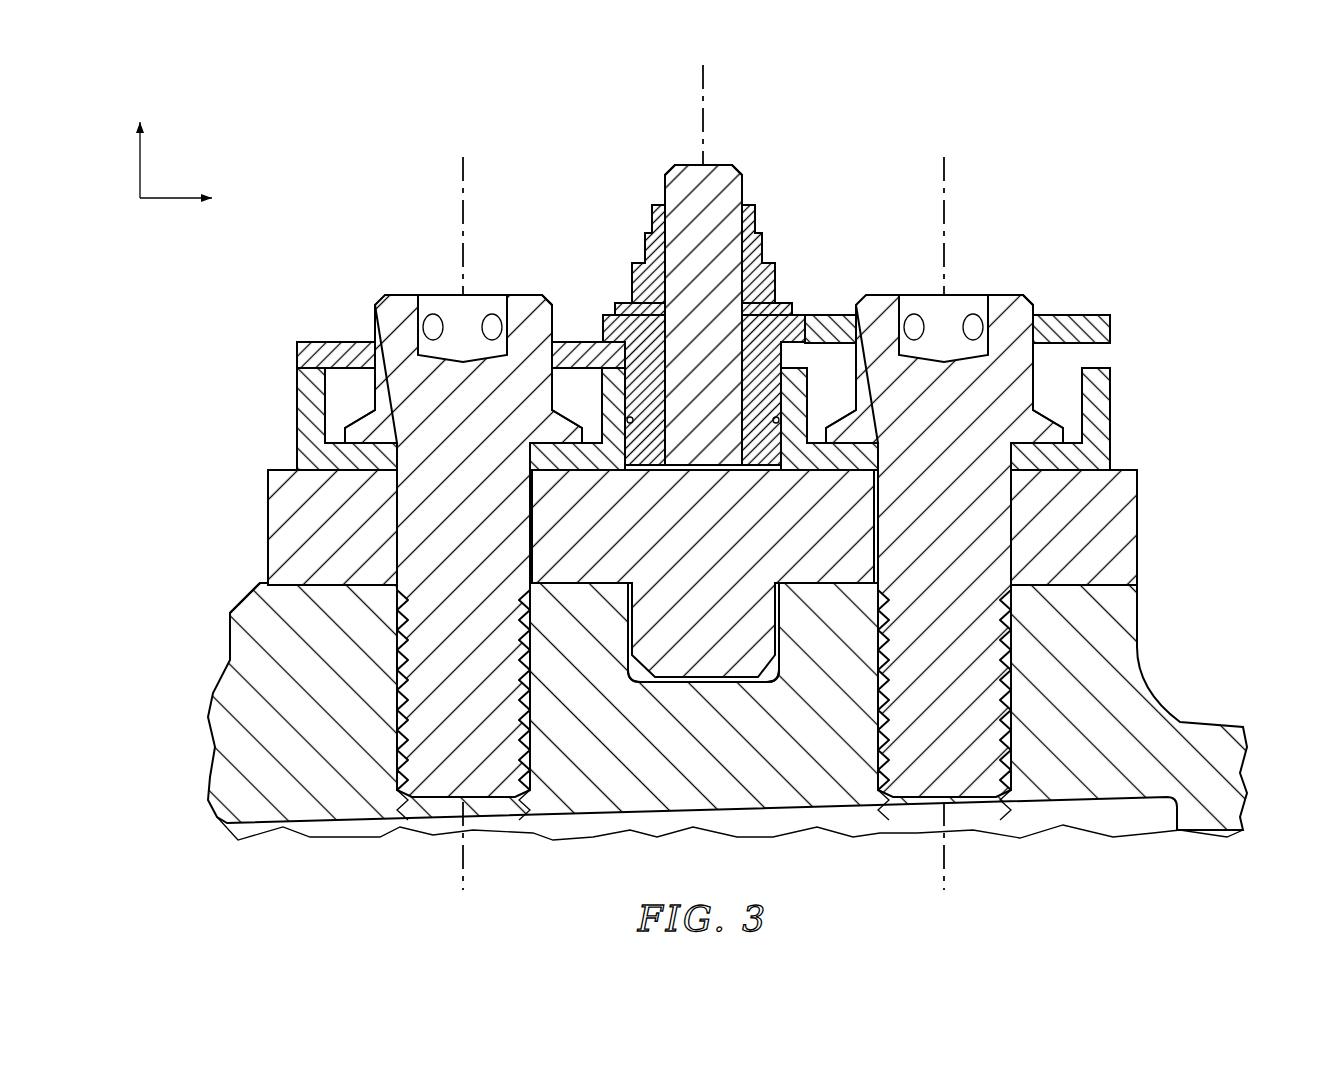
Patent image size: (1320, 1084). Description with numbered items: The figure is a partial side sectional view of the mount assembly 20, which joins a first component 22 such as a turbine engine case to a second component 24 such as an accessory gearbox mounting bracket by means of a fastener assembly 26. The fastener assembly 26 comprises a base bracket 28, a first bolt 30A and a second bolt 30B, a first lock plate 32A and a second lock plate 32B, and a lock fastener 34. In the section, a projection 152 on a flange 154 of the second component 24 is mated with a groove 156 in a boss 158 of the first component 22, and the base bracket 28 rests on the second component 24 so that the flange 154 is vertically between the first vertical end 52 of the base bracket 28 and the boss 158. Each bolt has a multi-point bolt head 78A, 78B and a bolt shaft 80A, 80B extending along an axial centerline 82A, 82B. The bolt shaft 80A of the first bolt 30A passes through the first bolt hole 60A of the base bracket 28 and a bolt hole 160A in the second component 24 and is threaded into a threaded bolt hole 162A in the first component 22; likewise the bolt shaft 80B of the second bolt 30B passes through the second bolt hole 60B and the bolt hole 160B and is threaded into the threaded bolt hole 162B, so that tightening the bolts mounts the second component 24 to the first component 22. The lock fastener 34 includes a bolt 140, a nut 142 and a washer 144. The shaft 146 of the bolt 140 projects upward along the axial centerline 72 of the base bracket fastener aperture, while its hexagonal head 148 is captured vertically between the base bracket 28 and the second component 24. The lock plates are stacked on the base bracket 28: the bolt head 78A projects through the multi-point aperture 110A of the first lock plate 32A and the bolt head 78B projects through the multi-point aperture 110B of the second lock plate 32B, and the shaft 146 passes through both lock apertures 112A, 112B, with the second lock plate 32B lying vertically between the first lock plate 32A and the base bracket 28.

The mount assembly 20 is at (1172, 192).
The first component 22 is at (1168, 696).
The second component 24 is at (1162, 508).
The fastener assembly 26 is at (850, 254).
The base bracket 28 is at (1122, 402).
The first bolt 30A is at (1032, 290).
The second bolt 30B is at (376, 288).
The first lock plate 32A is at (1120, 325).
The second lock plate 32B is at (295, 354).
The lock fastener 34 is at (756, 192).
The first vertical end 52 is at (1100, 486).
The first bolt hole 60A is at (1065, 394).
The second bolt hole 60B is at (343, 400).
The axial centerline 72 is at (700, 88).
The bolt head 78A is at (1010, 294).
The bolt head 78B is at (400, 294).
The bolt shaft 80A is at (976, 796).
The bolt shaft 80B is at (430, 796).
The axial centerline 82A is at (946, 178).
The axial centerline 82B is at (462, 178).
The multi-point aperture 110A is at (1038, 318).
The multi-point aperture 110B is at (374, 330).
The lock aperture 112A is at (768, 304).
The lock aperture 112B is at (632, 380).
The bolt 140 is at (722, 158).
The nut 142 is at (640, 245).
The washer 144 is at (620, 300).
The shaft 146 is at (678, 176).
The head 148 is at (672, 450).
The projection 152 is at (695, 685).
The flange 154 is at (1137, 538).
The groove 156 is at (776, 682).
The boss 158 is at (228, 640).
The bolt hole 160A is at (1012, 540).
The bolt hole 160B is at (395, 540).
The threaded bolt hole 162A is at (1012, 740).
The threaded bolt hole 162B is at (400, 740).